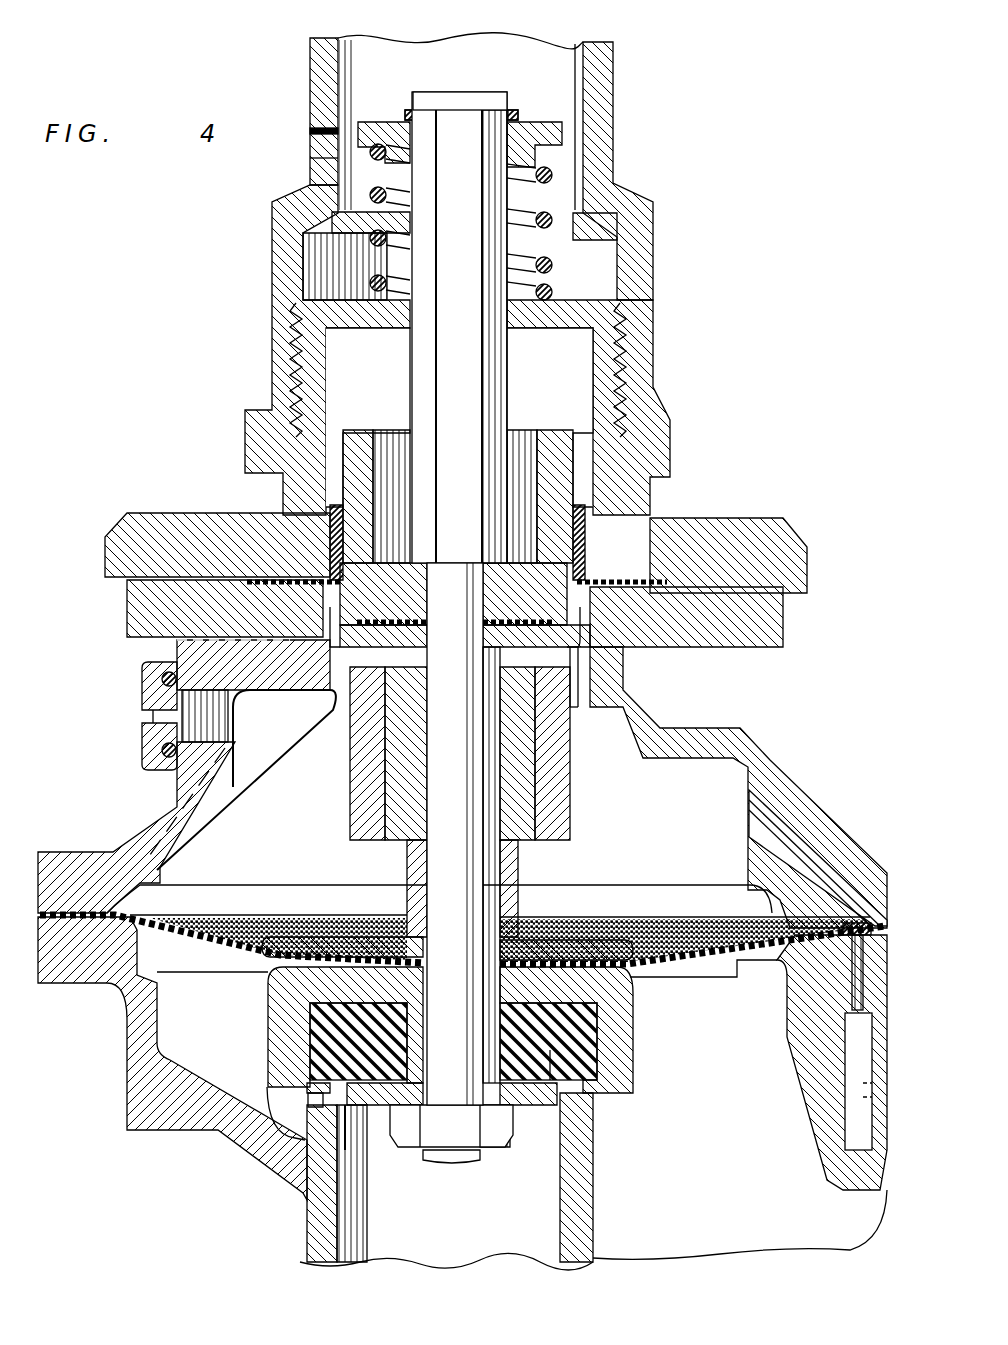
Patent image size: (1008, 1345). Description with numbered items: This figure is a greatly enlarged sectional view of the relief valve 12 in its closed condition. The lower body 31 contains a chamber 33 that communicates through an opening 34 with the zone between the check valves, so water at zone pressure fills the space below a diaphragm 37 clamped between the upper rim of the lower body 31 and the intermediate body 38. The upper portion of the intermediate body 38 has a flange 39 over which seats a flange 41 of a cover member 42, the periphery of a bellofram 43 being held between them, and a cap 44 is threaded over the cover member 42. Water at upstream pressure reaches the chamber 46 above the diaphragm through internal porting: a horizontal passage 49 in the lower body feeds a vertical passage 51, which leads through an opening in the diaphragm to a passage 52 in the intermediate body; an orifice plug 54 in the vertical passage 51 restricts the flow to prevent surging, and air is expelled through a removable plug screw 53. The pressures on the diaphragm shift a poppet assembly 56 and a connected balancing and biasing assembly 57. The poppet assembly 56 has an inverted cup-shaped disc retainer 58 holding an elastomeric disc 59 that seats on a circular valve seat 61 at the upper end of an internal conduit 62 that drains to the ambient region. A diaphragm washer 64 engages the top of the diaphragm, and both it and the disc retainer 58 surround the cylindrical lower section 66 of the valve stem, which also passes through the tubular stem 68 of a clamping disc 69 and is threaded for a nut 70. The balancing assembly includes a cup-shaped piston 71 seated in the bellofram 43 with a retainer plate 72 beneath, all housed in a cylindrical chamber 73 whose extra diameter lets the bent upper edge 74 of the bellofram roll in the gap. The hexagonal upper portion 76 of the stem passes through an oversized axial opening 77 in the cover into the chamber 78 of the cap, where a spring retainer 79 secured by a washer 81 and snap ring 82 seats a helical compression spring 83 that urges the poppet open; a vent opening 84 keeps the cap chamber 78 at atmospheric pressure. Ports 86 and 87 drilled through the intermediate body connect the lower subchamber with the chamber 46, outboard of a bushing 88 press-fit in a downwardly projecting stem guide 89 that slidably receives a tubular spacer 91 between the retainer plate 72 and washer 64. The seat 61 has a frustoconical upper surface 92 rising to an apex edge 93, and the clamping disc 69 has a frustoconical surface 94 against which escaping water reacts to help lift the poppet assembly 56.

The relief valve 12 is at (712, 238).
The lower body 31 is at (255, 1160).
The chamber 33 is at (652, 1172).
The opening 34 is at (838, 1217).
The diaphragm 37 is at (270, 915).
The intermediate body 38 is at (750, 760).
The flange 39 is at (775, 625).
The flange 41 is at (775, 535).
The cover member 42 is at (608, 363).
The bellofram 43 is at (585, 545).
The cap 44 is at (605, 112).
The chamber 46 is at (637, 840).
The horizontal passage 49 is at (870, 1118).
The vertical passage 51 is at (843, 1075).
The passage 52 is at (820, 840).
The removable plug screw 53 is at (142, 672).
The orifice plug 54 is at (845, 975).
The poppet assembly 56 is at (262, 1016).
The balancing and biasing assembly 57 is at (320, 598).
The disc retainer 58 is at (625, 1028).
The disc 59 is at (560, 1000).
The valve seat 61 is at (352, 1097).
The internal conduit 62 is at (449, 1217).
The diaphragm washer 64 is at (612, 940).
The cylindrical lower section 66 is at (437, 857).
The tubular stem 68 is at (500, 1028).
The clamping disc 69 is at (515, 1110).
The nut 70 is at (410, 1135).
The piston 71 is at (380, 435).
The retainer plate 72 is at (600, 648).
The cylindrical chamber 73 is at (560, 386).
The bent upper edge 74 is at (330, 520).
The hexagonal upper portion 76 is at (444, 270).
The oversized axial opening 77 is at (405, 322).
The chamber 78 is at (389, 80).
The spring retainer 79 is at (548, 125).
The washer 81 is at (405, 116).
The snap ring 82 is at (517, 118).
The helical compression spring 83 is at (372, 236).
The vent opening 84 is at (318, 162).
The port 86 is at (318, 705).
The port 87 is at (575, 700).
The bushing 88 is at (393, 843).
The stem guide 89 is at (555, 794).
The tubular spacer 91 is at (505, 862).
The frustoconical upper surface 92 is at (562, 1080).
The apex edge 93 is at (318, 1095).
The frustoconical surface 94 is at (570, 1092).